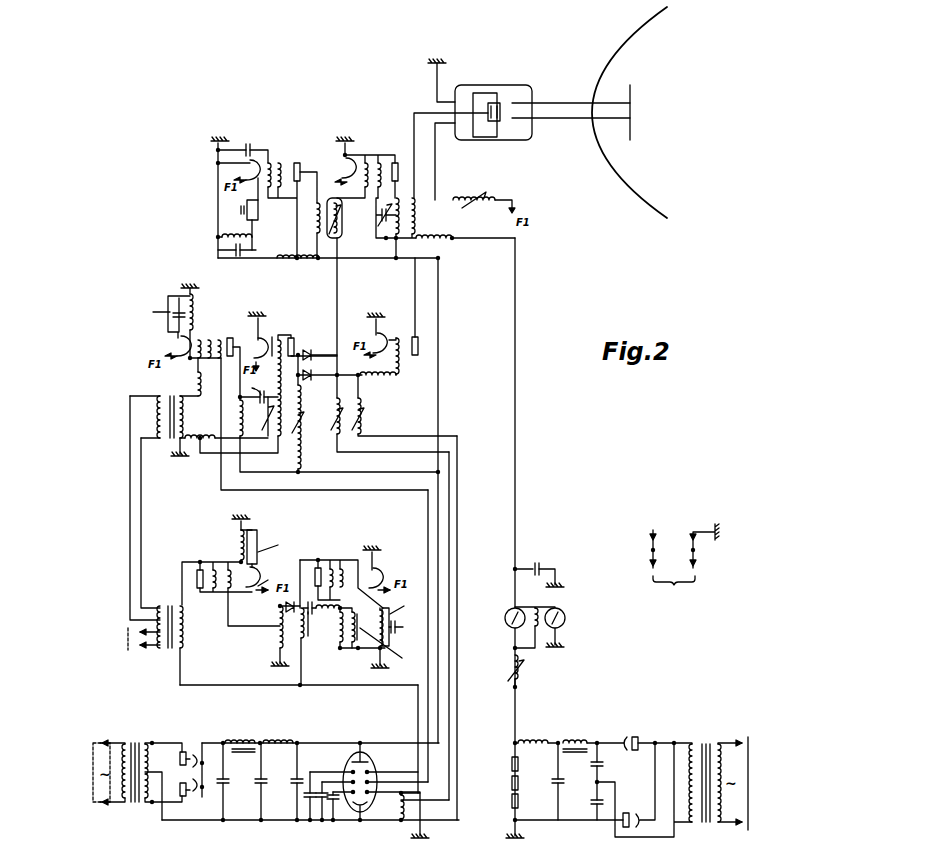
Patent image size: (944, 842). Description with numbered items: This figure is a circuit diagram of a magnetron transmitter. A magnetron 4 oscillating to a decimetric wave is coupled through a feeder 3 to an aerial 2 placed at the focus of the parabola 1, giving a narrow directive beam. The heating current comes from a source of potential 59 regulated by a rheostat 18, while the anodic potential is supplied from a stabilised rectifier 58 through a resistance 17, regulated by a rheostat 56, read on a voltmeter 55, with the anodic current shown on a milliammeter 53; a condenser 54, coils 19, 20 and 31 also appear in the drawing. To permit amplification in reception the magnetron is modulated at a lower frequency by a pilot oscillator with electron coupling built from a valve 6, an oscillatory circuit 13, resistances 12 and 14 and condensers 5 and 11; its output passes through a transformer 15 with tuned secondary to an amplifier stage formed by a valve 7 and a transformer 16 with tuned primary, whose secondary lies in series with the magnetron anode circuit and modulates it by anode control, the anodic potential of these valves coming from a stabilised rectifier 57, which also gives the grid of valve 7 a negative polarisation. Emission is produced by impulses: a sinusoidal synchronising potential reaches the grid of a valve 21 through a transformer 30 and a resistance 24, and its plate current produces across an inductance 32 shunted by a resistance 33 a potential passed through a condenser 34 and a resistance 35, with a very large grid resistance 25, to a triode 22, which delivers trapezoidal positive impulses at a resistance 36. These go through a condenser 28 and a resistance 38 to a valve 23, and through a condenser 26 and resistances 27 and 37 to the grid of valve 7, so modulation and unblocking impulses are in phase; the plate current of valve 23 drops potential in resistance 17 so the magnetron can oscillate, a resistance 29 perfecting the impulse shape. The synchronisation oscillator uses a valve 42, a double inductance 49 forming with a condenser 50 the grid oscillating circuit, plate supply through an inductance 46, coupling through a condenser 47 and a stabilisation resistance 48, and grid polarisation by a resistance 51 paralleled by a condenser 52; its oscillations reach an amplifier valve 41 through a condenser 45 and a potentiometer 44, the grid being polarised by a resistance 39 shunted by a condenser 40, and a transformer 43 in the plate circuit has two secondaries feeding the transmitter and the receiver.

The parabola 1 is at (629, 112).
The aerial 2 is at (636, 112).
The feeder 3 is at (571, 102).
The magnetron 4 is at (493, 103).
The condenser 5 is at (243, 143).
The valve 6 is at (292, 201).
The valve 7 is at (366, 166).
The condenser 11 is at (244, 180).
The resistance 12 is at (260, 218).
The oscillatory circuit 13 is at (246, 240).
The resistance 14 is at (298, 265).
The transformer 15 is at (339, 228).
The transformer 16 is at (408, 220).
The resistance 17 is at (465, 230).
The rheostat 18 is at (484, 205).
The capacitor 19 is at (164, 317).
The coil 20 is at (198, 321).
The valve 21 is at (215, 352).
The triode 22 is at (312, 335).
The valve 23 is at (391, 308).
The resistance 24 is at (190, 377).
The resistance 25 is at (264, 346).
The condenser 26 is at (309, 348).
The resistance 27 is at (324, 345).
The condenser 28 is at (330, 369).
The resistance 29 is at (379, 356).
The transformer 30 is at (164, 426).
The coil 31 is at (210, 429).
The inductance 32 is at (234, 415).
The resistance 33 is at (259, 388).
The condenser 34 is at (275, 416).
The resistance 35 is at (259, 436).
The resistance 36 is at (289, 389).
The resistance 37 is at (384, 413).
The resistance 38 is at (400, 405).
The resistance 39 is at (231, 539).
The condenser 40 is at (269, 548).
The amplifier valve 41 is at (267, 580).
The valve 42 is at (367, 568).
The transformer 43 is at (168, 645).
The potentiometer 44 is at (279, 635).
The condenser 45 is at (291, 600).
The inductance 46 is at (311, 622).
The condenser 47 is at (314, 601).
The stabilisation resistance 48 is at (329, 599).
The double inductance 49 is at (349, 636).
The condenser 50 is at (380, 637).
The resistance 51 is at (401, 619).
The condenser 52 is at (406, 627).
The milliammeter 53 is at (504, 618).
The capacitor 54 is at (538, 568).
The voltmeter 55 is at (549, 624).
The rheostat 56 is at (525, 672).
The stabilised rectifier 57 is at (262, 738).
The stabilised rectifier 58 is at (629, 735).
The source of potential 59 is at (681, 559).